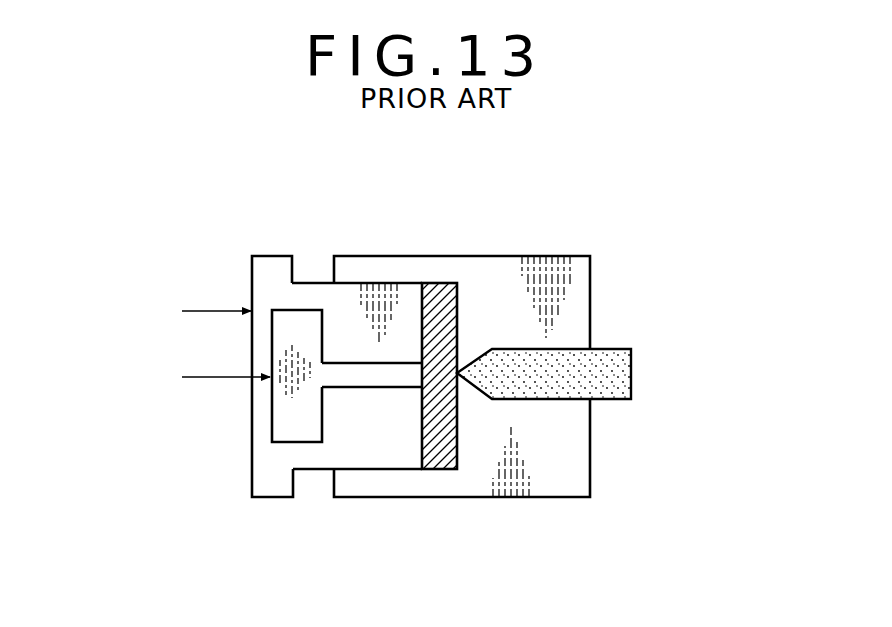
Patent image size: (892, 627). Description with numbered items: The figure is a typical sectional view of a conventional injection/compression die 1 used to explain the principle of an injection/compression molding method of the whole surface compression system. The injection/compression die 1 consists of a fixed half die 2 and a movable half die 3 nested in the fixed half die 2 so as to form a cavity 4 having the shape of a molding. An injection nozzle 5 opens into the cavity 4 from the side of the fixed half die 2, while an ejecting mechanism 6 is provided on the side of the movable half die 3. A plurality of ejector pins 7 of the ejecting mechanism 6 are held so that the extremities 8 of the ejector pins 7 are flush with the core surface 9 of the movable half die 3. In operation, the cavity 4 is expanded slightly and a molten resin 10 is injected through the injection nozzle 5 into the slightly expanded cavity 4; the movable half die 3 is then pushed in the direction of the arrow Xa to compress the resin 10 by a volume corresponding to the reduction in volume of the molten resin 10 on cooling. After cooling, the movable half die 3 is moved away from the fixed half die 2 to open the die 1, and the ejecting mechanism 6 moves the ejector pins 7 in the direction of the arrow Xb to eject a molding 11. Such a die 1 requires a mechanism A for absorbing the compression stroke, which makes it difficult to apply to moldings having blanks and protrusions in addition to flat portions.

The injection/compression die 1 is at (406, 250).
The fixed half die 2 is at (548, 253).
The movable half die 3 is at (272, 255).
The cavity 4 is at (438, 463).
The injection nozzle 5 is at (610, 399).
The ejecting mechanism 6 is at (280, 423).
The ejector pins 7 is at (382, 378).
The extremities of the ejector pins 8 is at (418, 388).
The core surface 9 is at (430, 320).
The molten resin 10 is at (603, 362).
The molding 11 is at (440, 413).
The arrow Xa is at (198, 307).
The arrow Xb is at (207, 373).
The mechanism for absorbing the compression stroke A is at (311, 275).